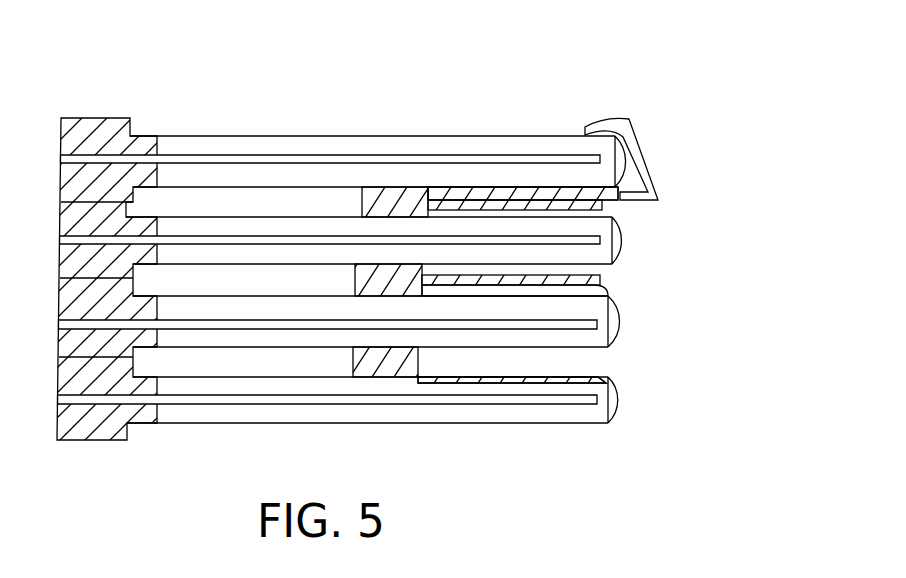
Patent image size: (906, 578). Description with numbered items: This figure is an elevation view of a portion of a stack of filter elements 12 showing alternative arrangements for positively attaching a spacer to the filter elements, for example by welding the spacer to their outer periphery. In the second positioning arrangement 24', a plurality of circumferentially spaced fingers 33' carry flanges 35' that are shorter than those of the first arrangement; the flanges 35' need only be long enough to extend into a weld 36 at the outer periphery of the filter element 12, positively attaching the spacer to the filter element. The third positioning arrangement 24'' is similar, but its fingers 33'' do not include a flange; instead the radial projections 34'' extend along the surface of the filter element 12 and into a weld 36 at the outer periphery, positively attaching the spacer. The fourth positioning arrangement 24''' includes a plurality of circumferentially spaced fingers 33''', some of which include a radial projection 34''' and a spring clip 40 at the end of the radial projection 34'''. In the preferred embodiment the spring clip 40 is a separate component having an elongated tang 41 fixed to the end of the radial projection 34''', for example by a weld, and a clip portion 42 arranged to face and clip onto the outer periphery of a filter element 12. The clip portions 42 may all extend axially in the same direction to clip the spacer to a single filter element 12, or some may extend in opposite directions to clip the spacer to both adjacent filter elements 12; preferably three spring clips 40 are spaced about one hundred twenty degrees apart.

The filter element 12 is at (249, 222).
The fingers 33''' is at (502, 152).
The radial projection 34''' is at (523, 147).
The elongated tang 41 is at (567, 198).
The spring clip 40 is at (645, 127).
The clip portion 42 is at (646, 158).
The fourth positioning arrangement 24''' is at (746, 177).
The fingers 33' is at (557, 255).
The flanges 35' is at (564, 276).
The second positioning arrangement 24' is at (720, 287).
The weld 36 is at (621, 324).
The third positioning arrangement 24'' is at (713, 367).
The fingers 33'' is at (512, 423).
The radial projections 34'' is at (512, 426).